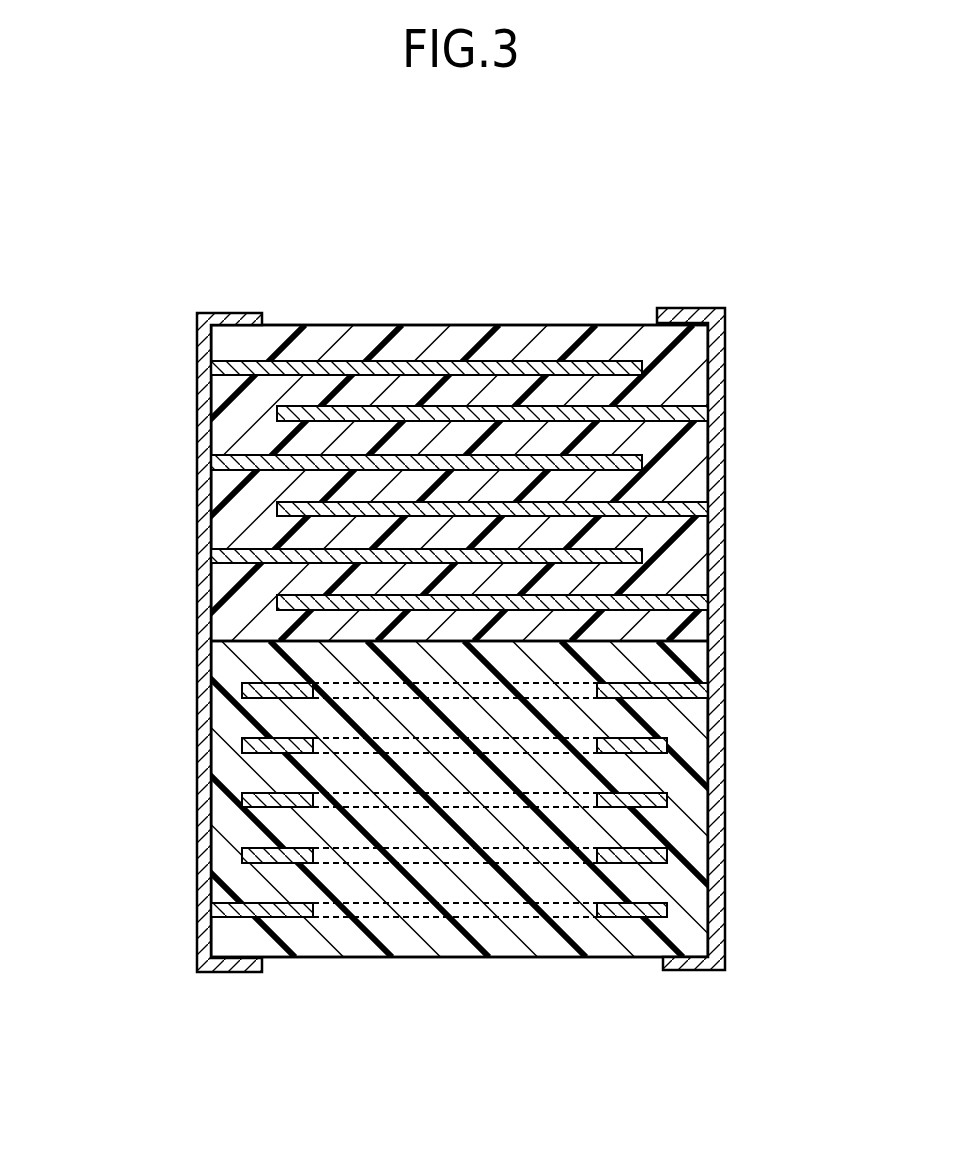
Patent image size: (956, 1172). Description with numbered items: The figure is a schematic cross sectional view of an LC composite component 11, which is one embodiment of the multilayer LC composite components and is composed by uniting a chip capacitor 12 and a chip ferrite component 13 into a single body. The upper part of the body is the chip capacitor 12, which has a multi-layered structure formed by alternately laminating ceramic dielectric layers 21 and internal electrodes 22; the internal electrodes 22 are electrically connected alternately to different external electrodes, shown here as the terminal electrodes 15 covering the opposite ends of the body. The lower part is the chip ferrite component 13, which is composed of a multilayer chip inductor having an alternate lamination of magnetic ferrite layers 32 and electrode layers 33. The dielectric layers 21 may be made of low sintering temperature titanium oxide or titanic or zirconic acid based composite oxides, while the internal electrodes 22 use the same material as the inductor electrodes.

The LC composite component 11 is at (515, 270).
The chip capacitor 12 is at (310, 306).
The chip ferrite component 13 is at (339, 980).
The external terminal electrode 15 is at (718, 550).
The ceramic dielectric layer 21 is at (420, 335).
The internal electrode 22 is at (613, 352).
The magnetic ferrite layer 32 is at (668, 742).
The electrode layer 33 is at (677, 675).